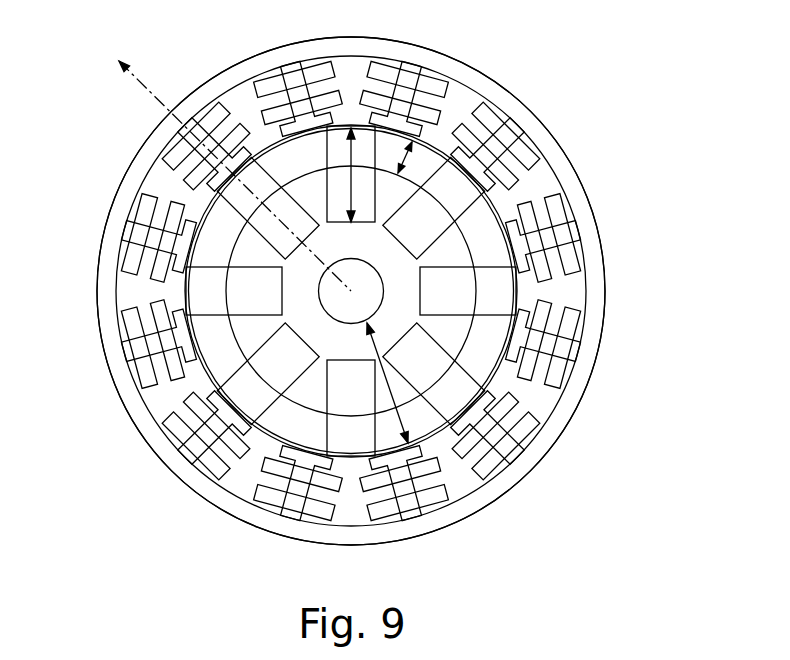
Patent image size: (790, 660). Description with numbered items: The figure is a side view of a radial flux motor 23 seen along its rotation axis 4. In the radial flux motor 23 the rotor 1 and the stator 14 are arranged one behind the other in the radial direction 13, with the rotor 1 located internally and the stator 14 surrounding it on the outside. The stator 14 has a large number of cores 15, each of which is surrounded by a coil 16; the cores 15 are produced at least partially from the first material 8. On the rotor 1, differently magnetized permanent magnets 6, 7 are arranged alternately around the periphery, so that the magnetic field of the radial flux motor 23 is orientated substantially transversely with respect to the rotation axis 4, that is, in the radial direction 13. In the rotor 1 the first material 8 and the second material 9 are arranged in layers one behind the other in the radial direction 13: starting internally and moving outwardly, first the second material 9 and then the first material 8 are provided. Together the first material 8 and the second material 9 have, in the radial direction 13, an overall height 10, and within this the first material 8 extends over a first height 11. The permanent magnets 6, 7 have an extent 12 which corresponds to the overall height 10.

The rotor 1 is at (284, 432).
The rotation axis 4 is at (350, 291).
The permanent magnet 6 is at (448, 375).
The permanent magnet 7 is at (493, 292).
The first material 8 is at (213, 363).
The second material 9 is at (450, 328).
The overall height 10 is at (475, 473).
The first height 11 is at (409, 158).
The extent 12 is at (357, 165).
The radial direction 13 is at (233, 163).
The stator 14 is at (603, 220).
The core 15 is at (192, 452).
The coil 16 is at (507, 182).
The radial flux motor 23 is at (540, 105).